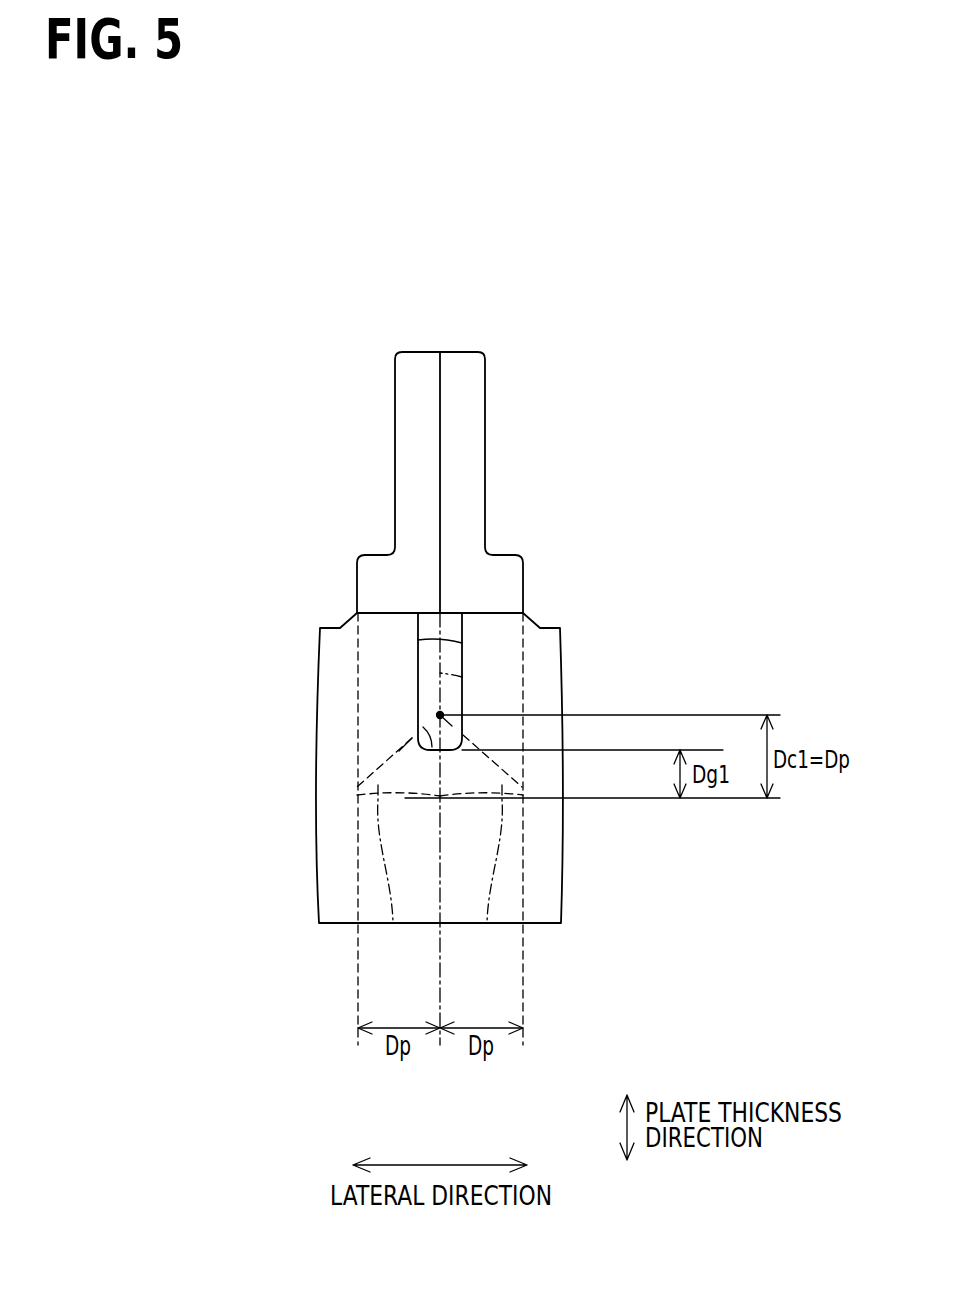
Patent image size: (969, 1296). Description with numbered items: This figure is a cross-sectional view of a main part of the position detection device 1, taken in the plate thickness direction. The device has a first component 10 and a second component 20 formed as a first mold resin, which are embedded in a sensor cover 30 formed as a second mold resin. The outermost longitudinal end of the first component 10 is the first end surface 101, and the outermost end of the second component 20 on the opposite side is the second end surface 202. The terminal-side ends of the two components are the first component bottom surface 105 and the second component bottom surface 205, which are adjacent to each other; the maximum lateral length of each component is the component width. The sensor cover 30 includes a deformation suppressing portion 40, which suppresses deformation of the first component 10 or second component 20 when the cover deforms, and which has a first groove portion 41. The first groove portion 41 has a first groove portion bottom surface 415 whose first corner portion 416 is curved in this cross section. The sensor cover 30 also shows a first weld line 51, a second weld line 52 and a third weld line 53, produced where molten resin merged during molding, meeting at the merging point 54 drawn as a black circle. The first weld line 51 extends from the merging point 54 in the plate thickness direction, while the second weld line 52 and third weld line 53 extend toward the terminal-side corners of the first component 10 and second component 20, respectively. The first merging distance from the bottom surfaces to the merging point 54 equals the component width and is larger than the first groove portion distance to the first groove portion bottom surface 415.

The position detection device 1 is at (615, 365).
The first component 10 is at (487, 498).
The second component 20 is at (395, 498).
The first end surface 101 is at (523, 585).
The second end surface 202 is at (357, 578).
The sensor cover 30 is at (548, 872).
The deformation suppressing portion 40 is at (418, 664).
The first groove portion 41 is at (418, 640).
The first groove portion bottom surface 415 is at (418, 733).
The first corner portion 416 is at (418, 748).
The first weld line 51 is at (462, 677).
The second weld line 52 is at (490, 763).
The third weld line 53 is at (383, 762).
The merging point 54 is at (440, 715).
The first component bottom surface 105 is at (487, 923).
The second component bottom surface 205 is at (393, 923).